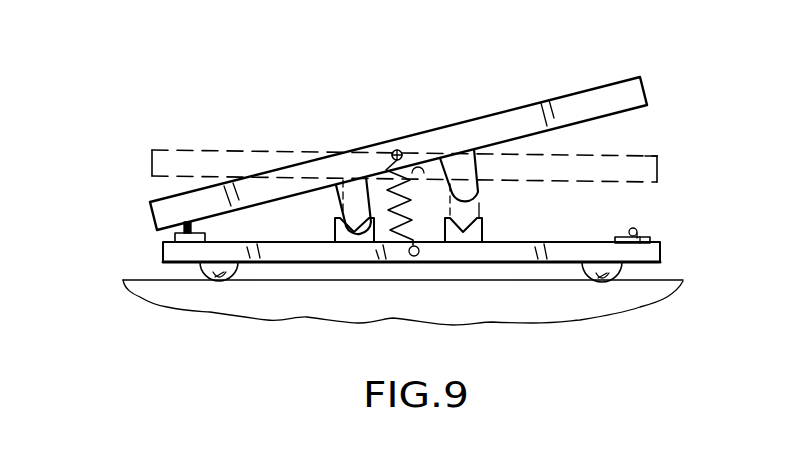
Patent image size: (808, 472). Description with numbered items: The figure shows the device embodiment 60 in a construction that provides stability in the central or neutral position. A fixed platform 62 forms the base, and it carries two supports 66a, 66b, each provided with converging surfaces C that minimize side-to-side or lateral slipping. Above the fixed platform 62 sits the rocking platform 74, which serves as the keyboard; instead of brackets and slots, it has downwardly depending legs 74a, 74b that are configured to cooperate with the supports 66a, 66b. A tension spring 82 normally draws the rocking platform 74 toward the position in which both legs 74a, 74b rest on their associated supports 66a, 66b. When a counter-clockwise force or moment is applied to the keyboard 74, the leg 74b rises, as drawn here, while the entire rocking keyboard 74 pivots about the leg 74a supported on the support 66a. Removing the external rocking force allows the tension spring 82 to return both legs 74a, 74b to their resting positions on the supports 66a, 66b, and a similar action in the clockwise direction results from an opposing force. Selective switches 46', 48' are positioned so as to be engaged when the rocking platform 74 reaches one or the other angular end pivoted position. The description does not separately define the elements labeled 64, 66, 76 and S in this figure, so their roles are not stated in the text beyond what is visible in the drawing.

The embodiment 60 is at (261, 36).
The fixed platform 62 is at (188, 250).
The front roller 64 is at (228, 268).
The rear roller 66 is at (608, 275).
The support 66a is at (352, 242).
The support 66b is at (484, 243).
The rocking platform 74 is at (622, 95).
The leg 74a is at (346, 206).
The leg 74b is at (478, 168).
The pivot 76 is at (398, 149).
The tension spring 82 is at (417, 250).
The selective switch 46' is at (151, 206).
The selective switch 48' is at (671, 224).
The support surface S is at (668, 282).
The converging surfaces C is at (484, 210).